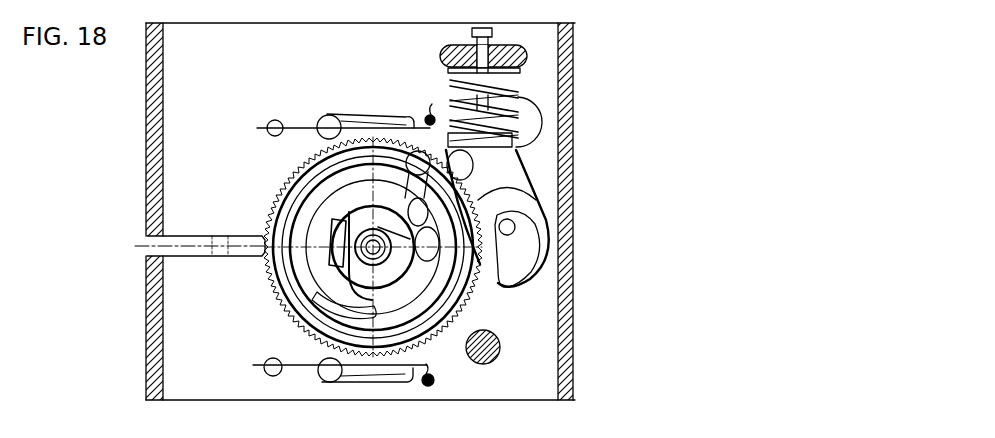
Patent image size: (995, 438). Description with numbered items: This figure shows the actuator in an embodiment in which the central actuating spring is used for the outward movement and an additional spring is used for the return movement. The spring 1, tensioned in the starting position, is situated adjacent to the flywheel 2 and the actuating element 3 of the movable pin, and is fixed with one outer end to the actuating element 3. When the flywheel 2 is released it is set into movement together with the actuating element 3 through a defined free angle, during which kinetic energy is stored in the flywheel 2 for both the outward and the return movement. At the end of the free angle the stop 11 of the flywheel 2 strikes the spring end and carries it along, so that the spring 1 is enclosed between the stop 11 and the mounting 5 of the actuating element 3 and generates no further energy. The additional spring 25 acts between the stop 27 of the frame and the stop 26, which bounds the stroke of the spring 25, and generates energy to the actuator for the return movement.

The spring 1 is at (470, 275).
The flywheel 2 is at (465, 298).
The actuating element 3 is at (437, 193).
The mounting 5 is at (447, 249).
The stop 11 is at (453, 160).
The additional spring 25 is at (508, 80).
The stop 26 is at (492, 30).
The stop of frame 27 is at (510, 53).